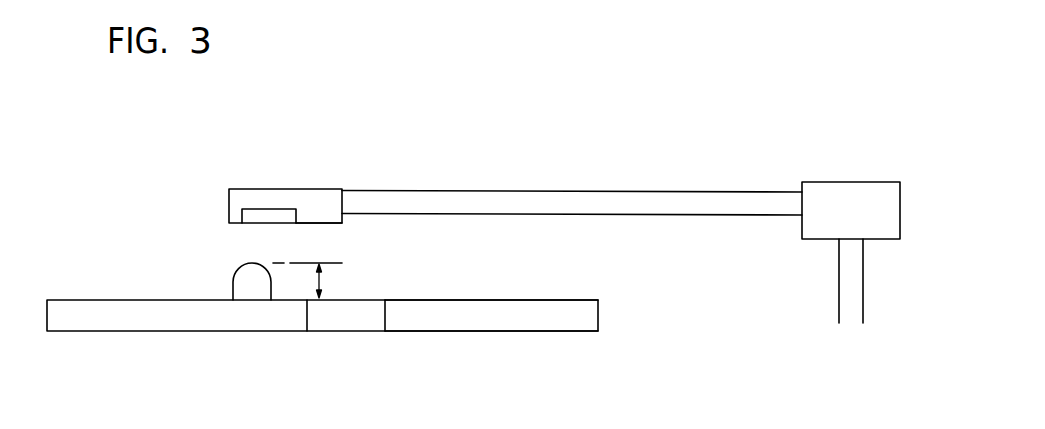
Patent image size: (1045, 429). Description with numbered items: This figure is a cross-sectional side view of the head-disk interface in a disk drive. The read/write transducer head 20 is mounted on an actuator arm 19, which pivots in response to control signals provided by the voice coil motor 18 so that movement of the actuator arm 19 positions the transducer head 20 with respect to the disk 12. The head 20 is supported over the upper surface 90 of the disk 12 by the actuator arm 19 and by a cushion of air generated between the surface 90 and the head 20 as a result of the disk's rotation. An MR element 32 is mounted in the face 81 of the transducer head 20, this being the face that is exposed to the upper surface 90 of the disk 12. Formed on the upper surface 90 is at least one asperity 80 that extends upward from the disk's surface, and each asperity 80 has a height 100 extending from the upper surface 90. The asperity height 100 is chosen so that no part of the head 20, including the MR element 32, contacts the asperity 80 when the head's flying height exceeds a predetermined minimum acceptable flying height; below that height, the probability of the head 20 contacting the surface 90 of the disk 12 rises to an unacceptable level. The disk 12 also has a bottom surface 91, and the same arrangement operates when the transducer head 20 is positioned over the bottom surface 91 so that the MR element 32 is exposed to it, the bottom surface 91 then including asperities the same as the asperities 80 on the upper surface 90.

The disk 12 is at (132, 341).
The voice coil motor 18 is at (849, 167).
The actuator arm 19 is at (598, 181).
The read/write transducer head 20 is at (273, 172).
The MR element 32 is at (251, 227).
The asperity 80 is at (232, 283).
The face of the transducer head 81 is at (326, 228).
The upper surface of the disk 90 is at (572, 293).
The bottom surface of the disk 91 is at (574, 342).
The asperity height 100 is at (320, 282).